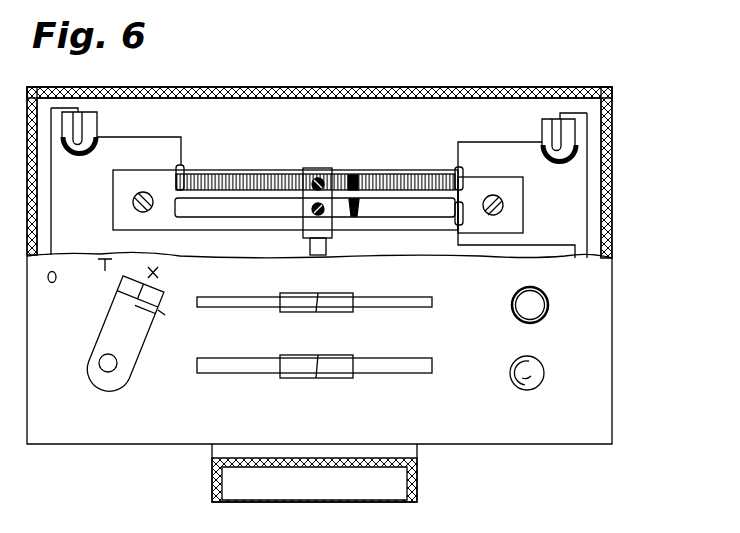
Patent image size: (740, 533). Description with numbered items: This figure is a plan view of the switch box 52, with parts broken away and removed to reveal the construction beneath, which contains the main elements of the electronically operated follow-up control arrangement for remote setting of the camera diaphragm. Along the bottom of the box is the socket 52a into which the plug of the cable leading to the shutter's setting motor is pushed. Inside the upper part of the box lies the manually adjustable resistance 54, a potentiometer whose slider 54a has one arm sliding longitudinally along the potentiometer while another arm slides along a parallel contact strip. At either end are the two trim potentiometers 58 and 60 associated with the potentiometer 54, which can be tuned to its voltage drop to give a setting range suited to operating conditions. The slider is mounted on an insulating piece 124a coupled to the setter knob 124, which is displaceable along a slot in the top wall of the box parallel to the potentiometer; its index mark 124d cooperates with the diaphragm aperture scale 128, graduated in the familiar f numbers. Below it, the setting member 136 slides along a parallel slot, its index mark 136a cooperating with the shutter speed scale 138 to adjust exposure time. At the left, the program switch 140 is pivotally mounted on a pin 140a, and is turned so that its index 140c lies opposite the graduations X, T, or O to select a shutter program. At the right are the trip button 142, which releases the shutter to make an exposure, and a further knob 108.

The switch box 52 is at (612, 203).
The socket 52a is at (417, 481).
The manually adjustable resistance 54 is at (222, 174).
The slider 54a is at (359, 198).
The trim potentiometer 58 is at (97, 124).
The trim potentiometer 60 is at (542, 127).
The adjusting knob 108 is at (527, 363).
The setter knob 124 is at (284, 311).
The insulating piece 124a is at (310, 167).
The index mark 124d is at (318, 313).
The diaphragm aperture scale 128 is at (430, 281).
The setting member 136 is at (286, 357).
The index mark 136a is at (318, 365).
The shutter speed scale 138 is at (420, 405).
The program switch 140 is at (145, 340).
The pin 140a is at (113, 368).
The index 140c is at (181, 315).
The trip button 142 is at (537, 305).